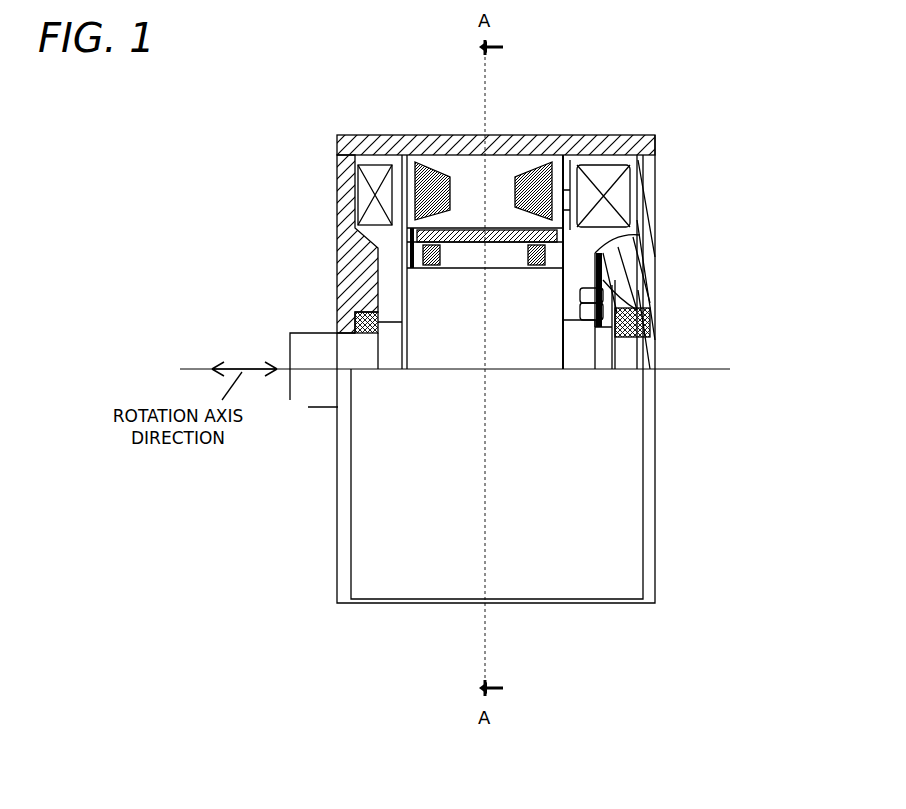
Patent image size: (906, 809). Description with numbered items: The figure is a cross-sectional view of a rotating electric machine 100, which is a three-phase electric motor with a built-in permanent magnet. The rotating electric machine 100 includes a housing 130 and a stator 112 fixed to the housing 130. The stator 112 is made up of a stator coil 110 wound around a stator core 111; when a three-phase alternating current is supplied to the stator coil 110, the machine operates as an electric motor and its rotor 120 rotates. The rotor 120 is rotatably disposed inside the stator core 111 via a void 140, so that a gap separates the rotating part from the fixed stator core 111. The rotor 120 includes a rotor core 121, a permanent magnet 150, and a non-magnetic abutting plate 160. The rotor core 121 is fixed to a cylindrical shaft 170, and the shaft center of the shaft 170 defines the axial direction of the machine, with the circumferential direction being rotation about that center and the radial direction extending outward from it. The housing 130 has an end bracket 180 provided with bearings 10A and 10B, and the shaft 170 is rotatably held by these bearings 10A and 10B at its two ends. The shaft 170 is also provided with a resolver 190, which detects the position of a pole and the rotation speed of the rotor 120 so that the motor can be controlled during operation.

The rotating electric machine 100 is at (496, 455).
The stator coil 110 is at (337, 165).
The stator core 111 is at (478, 202).
The stator 112 is at (445, 160).
The rotor 120 is at (445, 337).
The rotor core 121 is at (465, 258).
The housing 130 is at (605, 137).
The void 140 is at (408, 155).
The permanent magnet 150 is at (493, 217).
The non-magnetic abutting plate 160 is at (551, 268).
The shaft 170 is at (300, 340).
The end bracket 180 is at (657, 160).
The resolver 190 is at (655, 277).
The bearing 10A is at (337, 280).
The bearing 10B is at (653, 308).